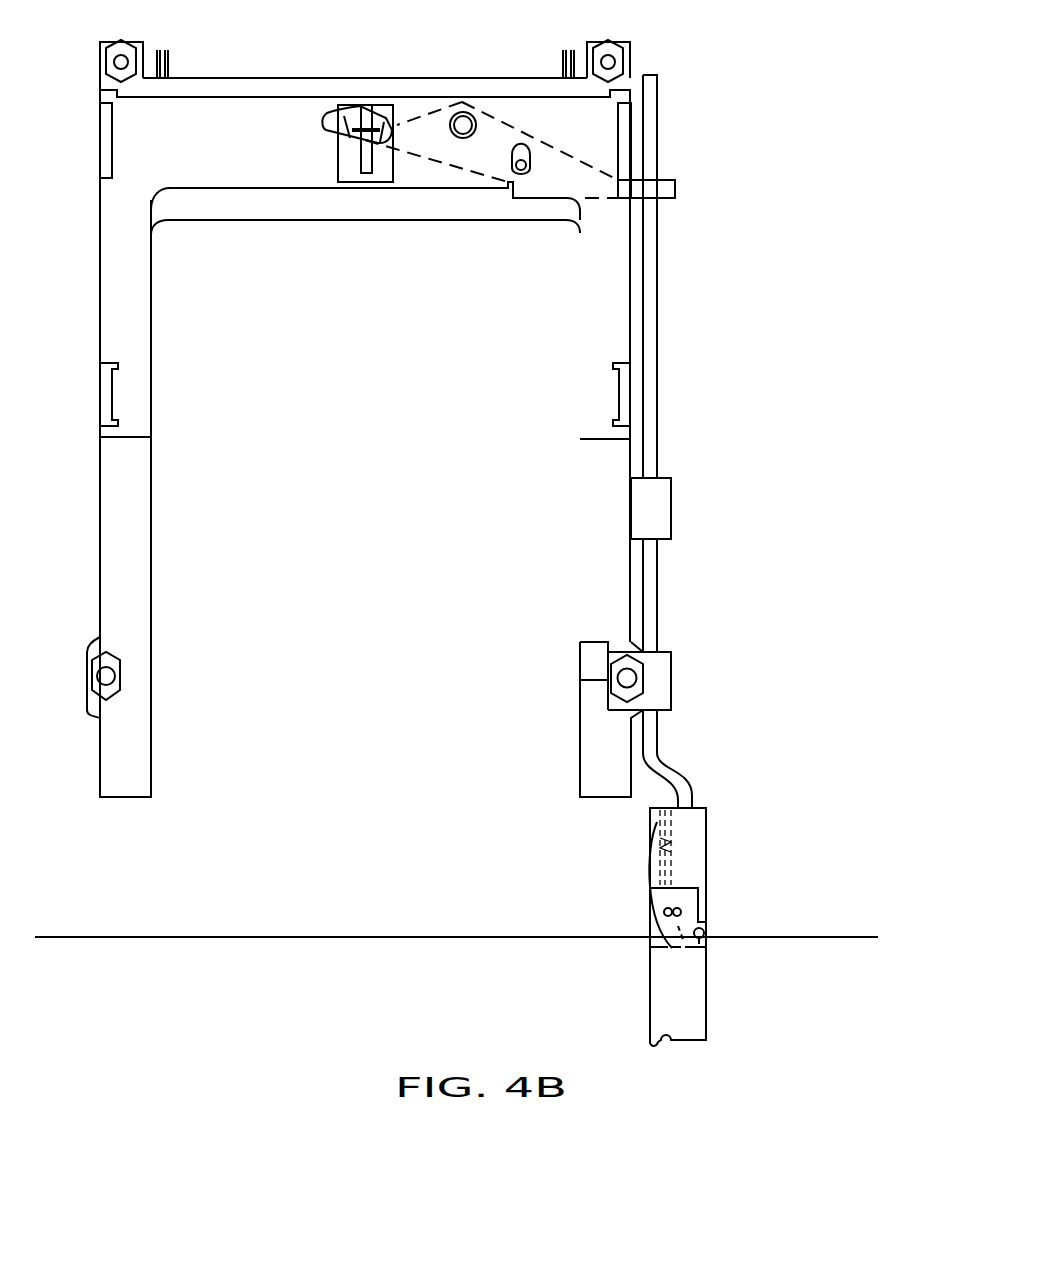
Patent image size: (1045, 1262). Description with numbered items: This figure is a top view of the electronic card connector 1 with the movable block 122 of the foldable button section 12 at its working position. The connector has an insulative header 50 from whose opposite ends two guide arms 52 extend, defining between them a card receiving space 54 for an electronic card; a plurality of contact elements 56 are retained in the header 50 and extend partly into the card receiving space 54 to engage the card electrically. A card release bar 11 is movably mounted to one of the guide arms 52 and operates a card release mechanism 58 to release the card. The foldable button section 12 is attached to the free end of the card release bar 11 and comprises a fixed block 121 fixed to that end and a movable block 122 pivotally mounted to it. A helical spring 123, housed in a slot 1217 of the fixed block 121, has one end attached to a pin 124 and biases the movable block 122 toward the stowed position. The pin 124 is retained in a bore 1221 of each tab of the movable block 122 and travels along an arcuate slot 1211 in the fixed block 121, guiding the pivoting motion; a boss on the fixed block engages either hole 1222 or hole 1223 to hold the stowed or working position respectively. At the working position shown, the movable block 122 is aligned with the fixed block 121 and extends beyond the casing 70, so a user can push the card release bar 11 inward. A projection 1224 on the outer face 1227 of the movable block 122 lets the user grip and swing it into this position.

The electronic card connector 1 is at (749, 32).
The card release bar 11 is at (657, 598).
The foldable button section 12 is at (706, 849).
The fixed block 121 is at (694, 820).
The movable block 122 is at (695, 977).
The helical spring 123 is at (668, 846).
The pin 124 is at (662, 910).
The arcuate slot 1211 is at (670, 948).
The slot 1217 is at (670, 823).
The bore 1221 is at (666, 915).
The hole 1222 is at (680, 906).
The hole 1223 is at (704, 937).
The projection 1224 is at (650, 1030).
The outer face 1227 is at (690, 1040).
The insulative header 50 is at (127, 47).
The guide arms 52 is at (135, 558).
The card receiving space 54 is at (382, 449).
The contact elements 56 is at (172, 50).
The card release mechanism 58 is at (436, 168).
The casing 70 is at (383, 940).